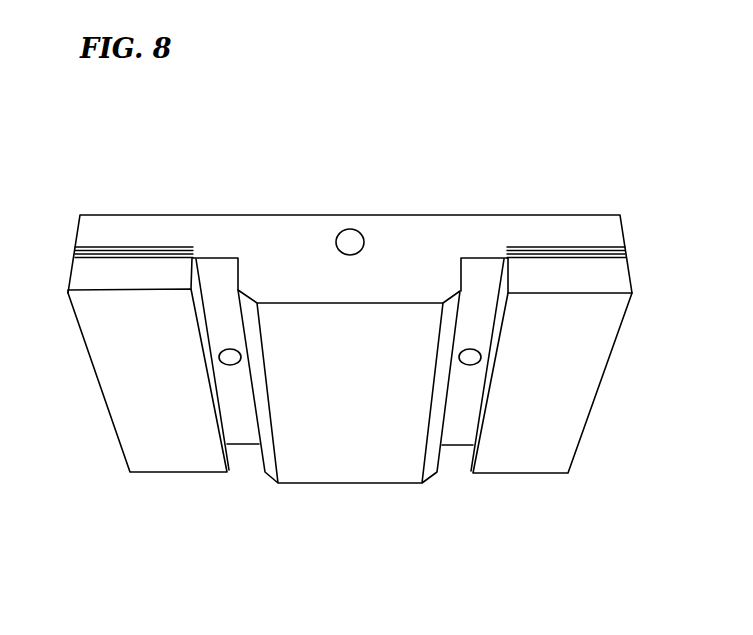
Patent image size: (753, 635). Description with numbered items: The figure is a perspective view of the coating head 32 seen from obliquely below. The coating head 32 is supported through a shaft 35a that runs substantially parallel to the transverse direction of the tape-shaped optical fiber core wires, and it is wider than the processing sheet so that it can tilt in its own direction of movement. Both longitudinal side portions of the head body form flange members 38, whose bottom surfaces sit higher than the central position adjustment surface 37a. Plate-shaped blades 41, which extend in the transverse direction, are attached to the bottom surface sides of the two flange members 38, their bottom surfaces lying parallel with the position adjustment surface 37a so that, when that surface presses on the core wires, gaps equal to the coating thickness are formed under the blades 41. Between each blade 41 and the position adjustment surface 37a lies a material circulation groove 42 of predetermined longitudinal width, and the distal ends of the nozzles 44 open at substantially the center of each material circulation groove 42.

The coating head 32 is at (622, 213).
The shaft 35a is at (352, 228).
The flange members 38 is at (77, 236).
The blades 41 is at (163, 464).
The material circulation grooves 42 is at (240, 457).
The position adjustment surface 37a is at (338, 468).
The nozzles 44 is at (230, 366).